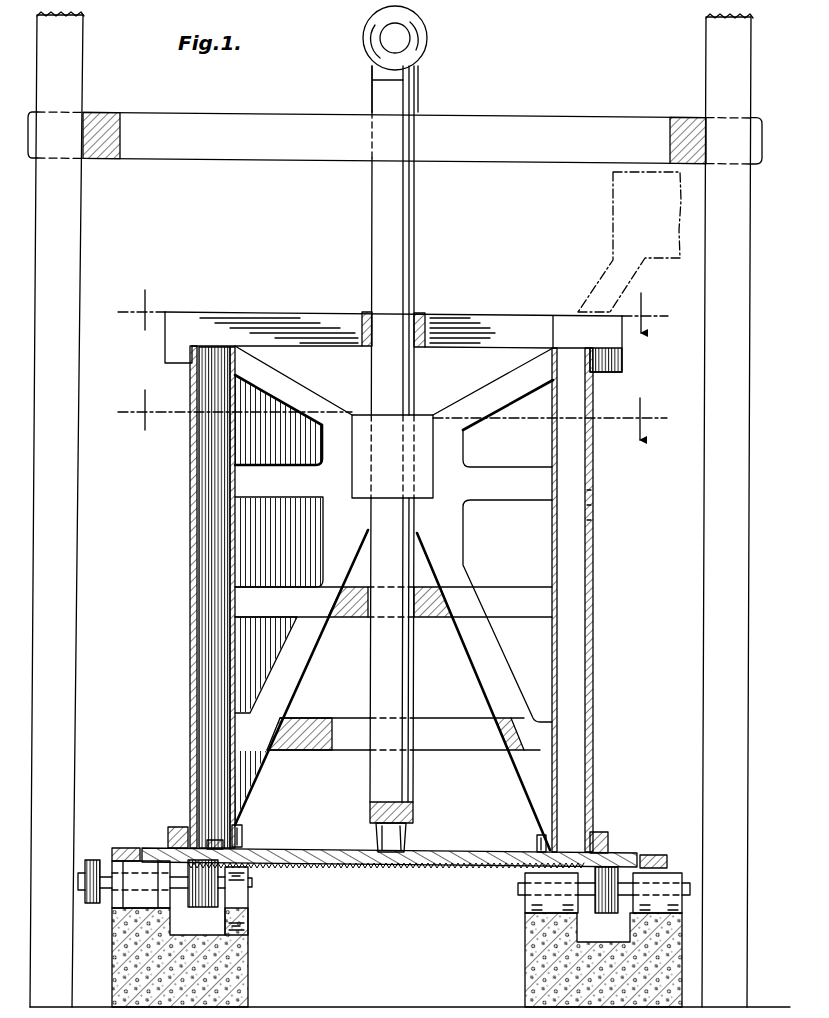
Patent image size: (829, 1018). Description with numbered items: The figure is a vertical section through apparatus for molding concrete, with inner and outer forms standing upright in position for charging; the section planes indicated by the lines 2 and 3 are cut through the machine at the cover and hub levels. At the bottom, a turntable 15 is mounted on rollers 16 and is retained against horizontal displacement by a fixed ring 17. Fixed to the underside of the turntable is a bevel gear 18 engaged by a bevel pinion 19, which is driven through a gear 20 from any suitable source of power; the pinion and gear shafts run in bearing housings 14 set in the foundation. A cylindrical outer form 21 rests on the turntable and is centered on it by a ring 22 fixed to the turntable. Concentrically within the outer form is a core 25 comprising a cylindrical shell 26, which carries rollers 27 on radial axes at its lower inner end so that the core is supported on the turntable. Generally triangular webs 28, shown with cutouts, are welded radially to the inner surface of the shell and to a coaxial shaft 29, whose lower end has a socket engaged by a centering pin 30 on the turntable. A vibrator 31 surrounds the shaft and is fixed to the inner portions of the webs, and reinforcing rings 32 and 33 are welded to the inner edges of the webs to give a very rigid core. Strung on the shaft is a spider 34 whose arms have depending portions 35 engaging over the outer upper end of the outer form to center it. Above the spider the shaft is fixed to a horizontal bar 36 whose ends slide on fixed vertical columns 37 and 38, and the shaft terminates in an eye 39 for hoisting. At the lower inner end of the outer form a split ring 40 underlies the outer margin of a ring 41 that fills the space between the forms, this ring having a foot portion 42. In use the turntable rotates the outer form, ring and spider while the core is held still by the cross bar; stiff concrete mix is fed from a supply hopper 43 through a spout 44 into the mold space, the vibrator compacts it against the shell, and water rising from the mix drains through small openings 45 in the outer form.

The section line 2- 2 is at (391, 311).
The section line 3- 3 is at (391, 415).
The drive shaft bearing assembly 14 is at (604, 890).
The turntable 15 is at (455, 853).
The rollers 16 is at (537, 935).
The fixed ring 17 is at (654, 855).
The bevel gear 18 is at (438, 872).
The bevel pinion 19 is at (210, 905).
The gear 20 is at (93, 860).
The cylindrical outer form 21 is at (593, 666).
The ring 22 is at (600, 832).
The core 25 is at (207, 545).
The cylindrical shell 26 is at (232, 666).
The rollers 27 is at (241, 834).
The webs 28 is at (313, 400).
The shaft 29 is at (415, 254).
The centering pin 30 is at (405, 827).
The vibrator 31 is at (425, 413).
The reinforcing ring 32 is at (333, 619).
The reinforcing ring 33 is at (290, 718).
The spider 34 is at (368, 311).
The depending portions 35 is at (165, 352).
The horizontal bar 36 is at (442, 124).
The vertical column 37 is at (65, 248).
The vertical column 38 is at (720, 373).
The eye 39 is at (428, 42).
The split ring 40 is at (170, 850).
The ring 41 is at (192, 826).
The foot portion 42 is at (228, 852).
The supply hopper 43 is at (621, 210).
The spout 44 is at (590, 297).
The small openings 45 is at (595, 524).